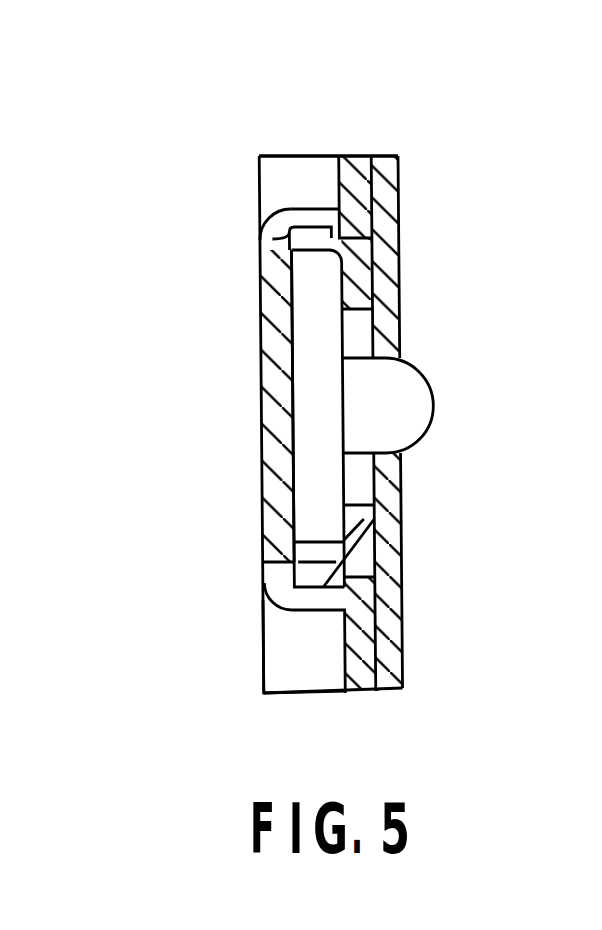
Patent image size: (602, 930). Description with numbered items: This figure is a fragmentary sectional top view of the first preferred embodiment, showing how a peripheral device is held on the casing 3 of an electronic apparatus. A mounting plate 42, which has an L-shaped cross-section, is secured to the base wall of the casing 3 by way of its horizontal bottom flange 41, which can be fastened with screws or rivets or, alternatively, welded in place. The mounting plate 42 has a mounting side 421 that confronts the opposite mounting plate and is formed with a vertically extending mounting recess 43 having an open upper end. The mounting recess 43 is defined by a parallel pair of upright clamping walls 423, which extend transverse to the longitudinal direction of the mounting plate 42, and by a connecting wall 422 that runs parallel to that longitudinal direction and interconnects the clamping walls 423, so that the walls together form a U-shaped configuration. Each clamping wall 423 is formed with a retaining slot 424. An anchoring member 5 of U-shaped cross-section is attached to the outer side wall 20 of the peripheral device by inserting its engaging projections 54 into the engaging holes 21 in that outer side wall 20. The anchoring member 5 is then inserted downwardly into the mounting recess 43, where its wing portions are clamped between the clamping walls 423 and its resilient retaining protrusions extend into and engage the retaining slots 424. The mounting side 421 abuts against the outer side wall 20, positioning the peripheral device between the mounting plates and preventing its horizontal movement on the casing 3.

The casing 3 is at (263, 672).
The anchoring member 5 is at (395, 263).
The outer side wall 20 is at (392, 550).
The engaging hole 21 is at (380, 352).
The bottom flange 41 is at (296, 634).
The mounting plate 42 is at (302, 209).
The mounting recess 43 is at (306, 266).
The engaging projection 54 is at (440, 420).
The mounting side 421 is at (378, 187).
The connecting wall 422 is at (282, 373).
The clamping wall 423 is at (355, 193).
The retaining slot 424 is at (274, 238).